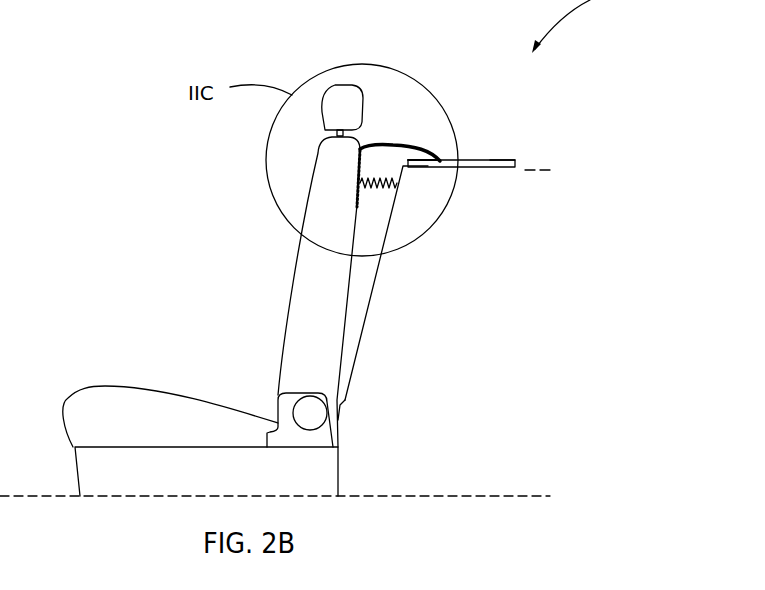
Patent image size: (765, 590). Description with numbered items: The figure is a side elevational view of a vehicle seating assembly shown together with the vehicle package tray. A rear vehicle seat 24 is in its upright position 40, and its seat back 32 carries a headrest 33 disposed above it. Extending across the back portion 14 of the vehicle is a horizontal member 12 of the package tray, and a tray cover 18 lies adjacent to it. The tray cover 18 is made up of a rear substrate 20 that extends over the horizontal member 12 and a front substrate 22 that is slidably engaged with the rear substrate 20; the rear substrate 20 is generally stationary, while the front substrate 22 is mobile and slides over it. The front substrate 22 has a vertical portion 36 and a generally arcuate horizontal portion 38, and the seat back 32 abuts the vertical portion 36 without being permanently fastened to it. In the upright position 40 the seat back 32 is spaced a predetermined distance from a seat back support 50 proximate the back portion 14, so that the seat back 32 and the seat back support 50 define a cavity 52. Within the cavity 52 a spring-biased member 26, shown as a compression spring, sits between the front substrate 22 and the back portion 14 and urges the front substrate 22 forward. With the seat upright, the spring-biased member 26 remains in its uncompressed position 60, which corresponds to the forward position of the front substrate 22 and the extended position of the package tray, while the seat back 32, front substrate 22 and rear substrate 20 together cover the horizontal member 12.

The horizontal member 12 is at (442, 161).
The back portion 14 is at (452, 363).
The tray cover 18 is at (560, 146).
The rear substrate 20 is at (490, 160).
The front substrate 22 is at (412, 150).
The rear vehicle seat 24 is at (162, 393).
The spring-biased member 26 is at (372, 177).
The seat back 32 is at (293, 268).
The headrest 33 is at (350, 85).
The vertical portion 36 is at (360, 180).
The horizontal portion 38 is at (385, 145).
The upright position 40 is at (240, 212).
The seat back support 50 is at (372, 283).
The cavity 52 is at (372, 230).
The uncompressed position 60 is at (390, 92).